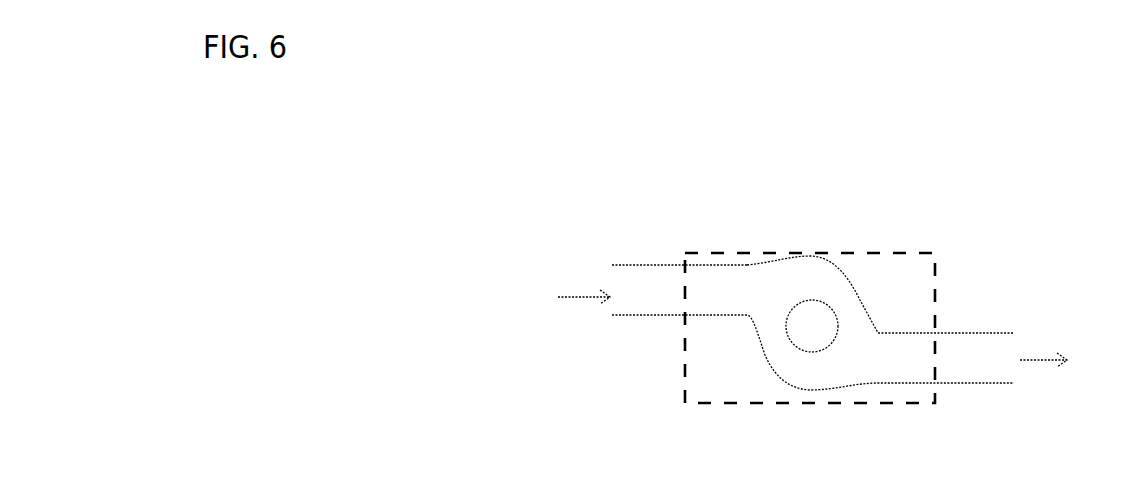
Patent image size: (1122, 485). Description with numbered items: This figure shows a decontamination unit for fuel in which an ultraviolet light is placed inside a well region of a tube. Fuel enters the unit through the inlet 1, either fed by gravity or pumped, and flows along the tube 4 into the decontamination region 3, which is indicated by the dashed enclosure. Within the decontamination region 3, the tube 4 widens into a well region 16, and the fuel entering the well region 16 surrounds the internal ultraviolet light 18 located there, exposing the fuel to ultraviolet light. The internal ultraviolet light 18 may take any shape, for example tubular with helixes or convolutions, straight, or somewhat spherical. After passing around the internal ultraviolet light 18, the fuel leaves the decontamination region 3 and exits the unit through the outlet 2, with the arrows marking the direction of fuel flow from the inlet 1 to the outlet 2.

The inlet 1 is at (561, 297).
The outlet 2 is at (1064, 361).
The decontamination region 3 is at (740, 253).
The tube 4 is at (667, 317).
The well region 16 is at (838, 278).
The internal ultraviolet light 18 is at (812, 325).